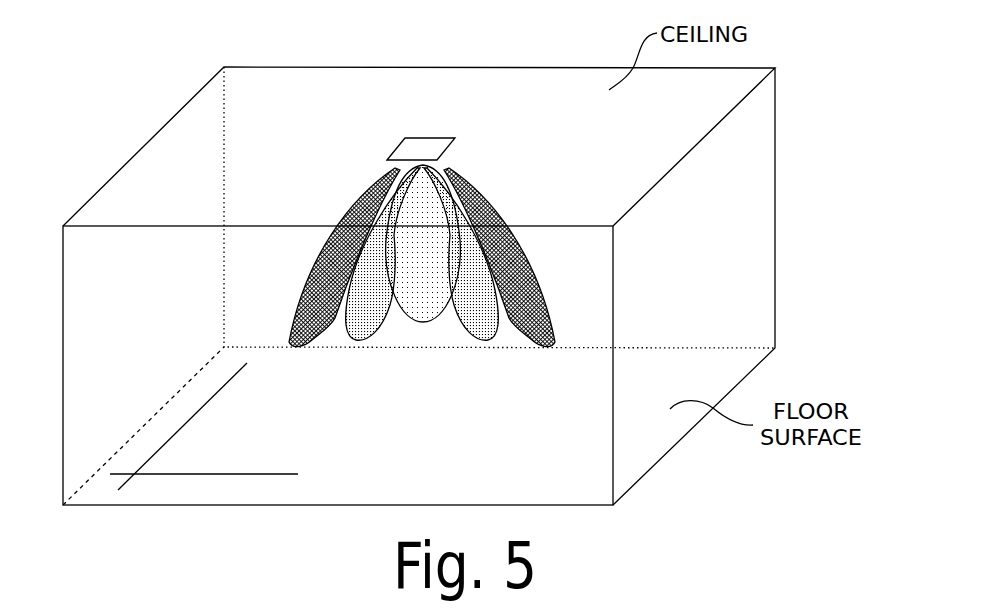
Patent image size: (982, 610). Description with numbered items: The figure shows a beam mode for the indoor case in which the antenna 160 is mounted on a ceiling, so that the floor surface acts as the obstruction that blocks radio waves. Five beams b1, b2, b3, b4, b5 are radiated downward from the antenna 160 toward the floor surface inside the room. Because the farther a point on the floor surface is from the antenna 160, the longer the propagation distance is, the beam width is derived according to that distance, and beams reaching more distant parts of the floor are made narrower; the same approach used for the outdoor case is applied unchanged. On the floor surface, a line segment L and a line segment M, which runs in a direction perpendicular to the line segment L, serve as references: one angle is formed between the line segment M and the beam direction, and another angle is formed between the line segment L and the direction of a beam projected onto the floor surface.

The antenna 160 is at (427, 137).
The beam b1 is at (280, 335).
The beam b2 is at (337, 332).
The beam b3 is at (420, 322).
The beam b4 is at (470, 333).
The beam b5 is at (523, 332).
The line segment L is at (182, 426).
The line segment M is at (204, 488).